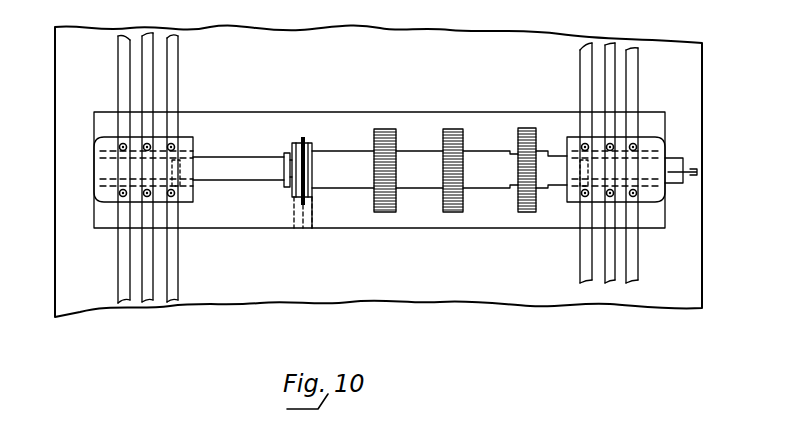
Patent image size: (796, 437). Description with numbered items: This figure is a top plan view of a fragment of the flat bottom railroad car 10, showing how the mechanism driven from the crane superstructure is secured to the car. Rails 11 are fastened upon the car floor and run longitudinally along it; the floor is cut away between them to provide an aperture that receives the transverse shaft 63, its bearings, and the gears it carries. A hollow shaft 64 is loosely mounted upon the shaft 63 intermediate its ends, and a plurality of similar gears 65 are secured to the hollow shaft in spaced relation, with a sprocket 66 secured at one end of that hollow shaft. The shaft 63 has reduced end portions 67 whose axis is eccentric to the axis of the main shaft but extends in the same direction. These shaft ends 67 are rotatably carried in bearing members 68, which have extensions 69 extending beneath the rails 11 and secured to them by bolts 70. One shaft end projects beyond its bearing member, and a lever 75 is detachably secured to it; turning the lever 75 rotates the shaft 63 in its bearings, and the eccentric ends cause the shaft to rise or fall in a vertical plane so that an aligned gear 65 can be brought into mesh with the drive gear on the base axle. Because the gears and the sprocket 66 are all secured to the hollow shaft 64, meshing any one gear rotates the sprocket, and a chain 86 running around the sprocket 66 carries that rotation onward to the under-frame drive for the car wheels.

The flat bottom railroad car 10 is at (386, 28).
The rails 11 is at (118, 303).
The shaft 63 is at (253, 155).
The hollow shaft 64 is at (412, 152).
The gears 65 is at (385, 128).
The sprocket 66 is at (310, 143).
The reduced end portions 67 is at (183, 160).
The bearing members 68 is at (180, 137).
The extensions 69 is at (100, 150).
The bolts 70 is at (147, 143).
The lever 75 is at (690, 185).
The chain 86 is at (316, 207).